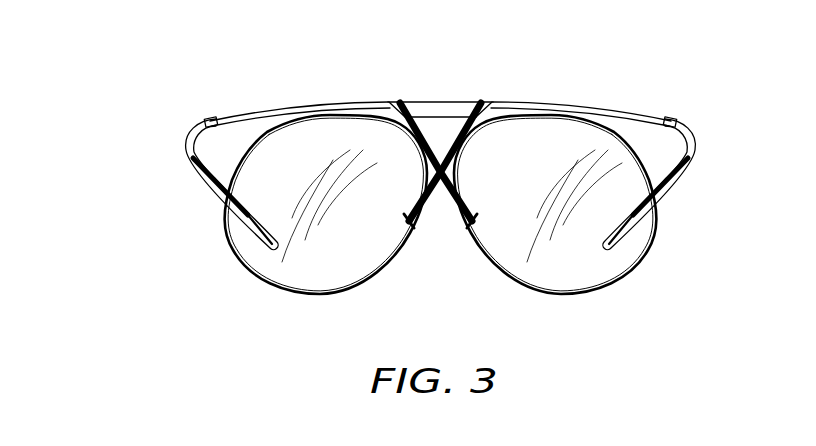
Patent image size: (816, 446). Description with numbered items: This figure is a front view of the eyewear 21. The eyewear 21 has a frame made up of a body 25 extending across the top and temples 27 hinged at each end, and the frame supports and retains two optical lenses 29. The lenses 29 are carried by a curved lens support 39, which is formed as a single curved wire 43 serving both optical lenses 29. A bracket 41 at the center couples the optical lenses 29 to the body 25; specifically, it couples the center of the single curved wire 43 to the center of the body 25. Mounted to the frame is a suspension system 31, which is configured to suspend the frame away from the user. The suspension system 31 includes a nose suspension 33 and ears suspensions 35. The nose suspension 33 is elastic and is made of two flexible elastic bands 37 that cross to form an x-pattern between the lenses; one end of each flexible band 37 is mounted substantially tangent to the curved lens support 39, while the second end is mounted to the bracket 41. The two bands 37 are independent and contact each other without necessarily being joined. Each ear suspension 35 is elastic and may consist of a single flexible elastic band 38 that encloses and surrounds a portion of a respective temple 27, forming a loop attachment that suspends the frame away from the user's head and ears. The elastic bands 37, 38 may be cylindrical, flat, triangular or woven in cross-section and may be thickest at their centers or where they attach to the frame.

The eyewear 21 is at (129, 60).
The body 25 is at (552, 105).
The temples 27 is at (187, 136).
The optical lenses 29 is at (352, 248).
The suspension system 31 is at (226, 160).
The nose suspension 33 is at (429, 228).
The ears suspensions 35 is at (200, 178).
The flexible elastic bands 37 is at (429, 206).
The flexible elastic band 38 is at (221, 188).
The curved lens support 39 is at (410, 230).
The bracket 41 is at (470, 103).
The single curved wire 43 is at (246, 272).